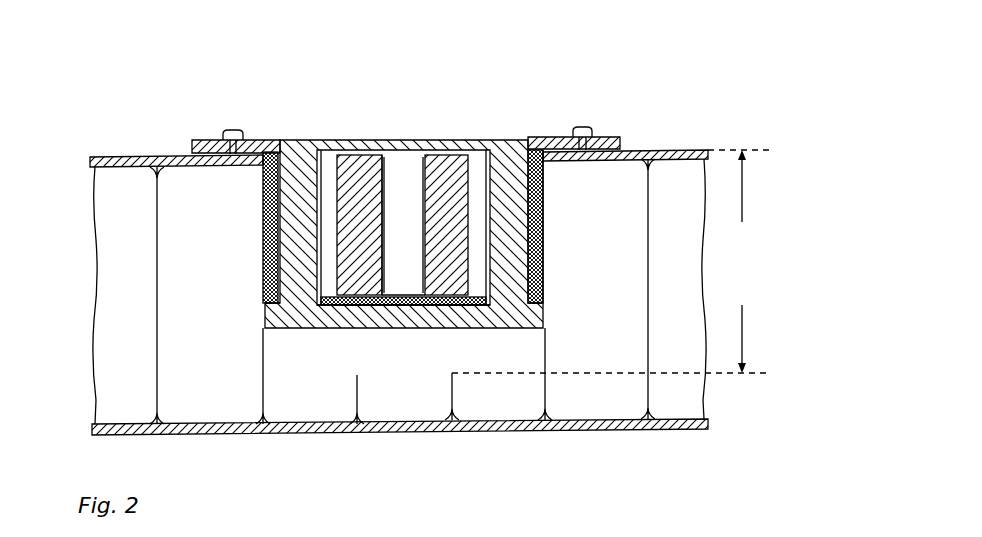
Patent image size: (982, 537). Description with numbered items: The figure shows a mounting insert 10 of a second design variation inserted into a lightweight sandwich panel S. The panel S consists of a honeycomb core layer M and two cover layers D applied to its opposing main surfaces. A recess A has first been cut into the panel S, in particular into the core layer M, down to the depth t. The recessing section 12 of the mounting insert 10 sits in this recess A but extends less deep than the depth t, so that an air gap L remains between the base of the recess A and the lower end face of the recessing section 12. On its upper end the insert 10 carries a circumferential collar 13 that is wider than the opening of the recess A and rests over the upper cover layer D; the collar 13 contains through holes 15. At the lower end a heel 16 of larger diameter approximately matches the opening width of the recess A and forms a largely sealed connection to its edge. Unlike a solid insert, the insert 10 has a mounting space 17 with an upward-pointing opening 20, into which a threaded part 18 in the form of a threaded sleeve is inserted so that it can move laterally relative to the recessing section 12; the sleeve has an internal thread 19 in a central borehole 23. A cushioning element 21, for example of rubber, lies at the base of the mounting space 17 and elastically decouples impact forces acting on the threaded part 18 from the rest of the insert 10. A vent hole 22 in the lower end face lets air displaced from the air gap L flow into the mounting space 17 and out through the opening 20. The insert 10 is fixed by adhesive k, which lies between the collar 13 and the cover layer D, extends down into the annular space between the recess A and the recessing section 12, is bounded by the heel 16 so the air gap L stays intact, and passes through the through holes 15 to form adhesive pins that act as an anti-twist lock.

The lightweight sandwich panel S is at (84, 149).
The cover layer D is at (131, 157).
The core layer M is at (95, 283).
The mounting insert 10 is at (514, 108).
The recessing section 12 is at (298, 287).
The circumferential collar 13 is at (252, 148).
The through holes 15 is at (228, 140).
The heel 16 is at (541, 323).
The mounting space 17 is at (322, 167).
The threaded part 18 is at (343, 167).
The internal thread 19 is at (380, 177).
The opening 20 is at (450, 147).
The cushioning element 21 is at (447, 305).
The vent hole 22 is at (408, 313).
The central borehole 23 is at (410, 167).
The adhesive k is at (548, 213).
The recess A is at (548, 277).
The depth t is at (738, 261).
The air gap L is at (336, 366).